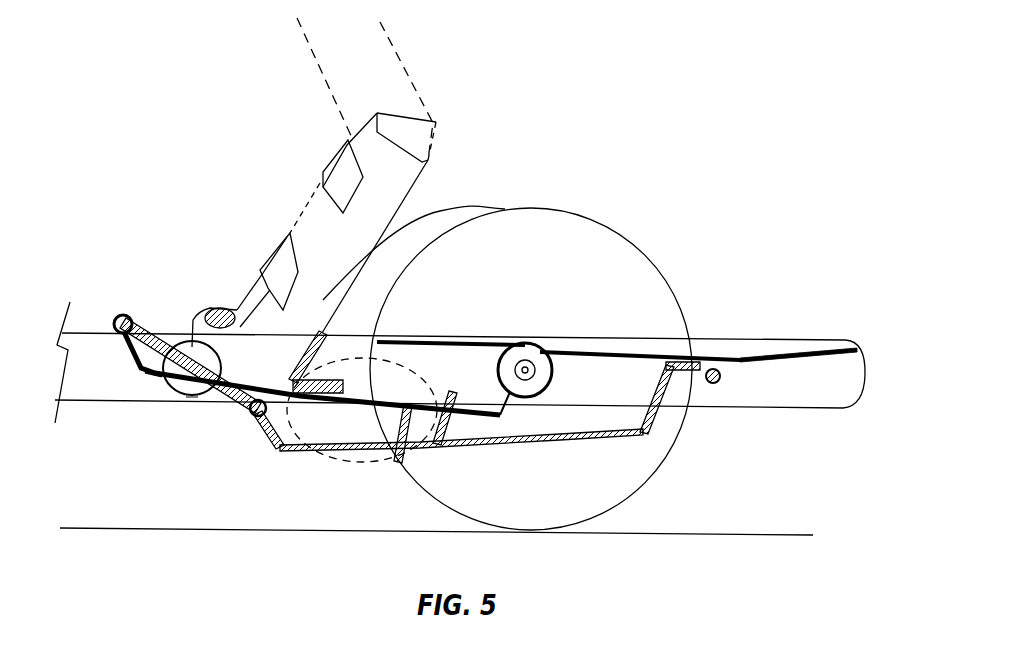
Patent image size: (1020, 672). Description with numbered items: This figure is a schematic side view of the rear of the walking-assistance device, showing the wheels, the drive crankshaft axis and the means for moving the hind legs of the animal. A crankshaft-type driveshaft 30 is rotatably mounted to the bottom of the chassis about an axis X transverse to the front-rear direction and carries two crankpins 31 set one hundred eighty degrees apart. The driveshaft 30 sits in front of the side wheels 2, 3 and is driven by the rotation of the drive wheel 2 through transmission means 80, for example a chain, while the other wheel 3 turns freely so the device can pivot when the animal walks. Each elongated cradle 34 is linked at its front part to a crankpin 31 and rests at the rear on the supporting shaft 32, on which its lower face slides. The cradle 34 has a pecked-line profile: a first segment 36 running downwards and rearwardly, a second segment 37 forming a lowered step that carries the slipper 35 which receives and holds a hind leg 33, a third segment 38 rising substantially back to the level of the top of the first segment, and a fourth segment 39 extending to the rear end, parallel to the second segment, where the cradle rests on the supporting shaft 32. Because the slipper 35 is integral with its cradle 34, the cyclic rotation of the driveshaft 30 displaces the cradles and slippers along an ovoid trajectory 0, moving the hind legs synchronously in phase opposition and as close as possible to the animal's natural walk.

The drive wheel 2 is at (544, 326).
The free wheel 3 is at (603, 228).
The hind leg 33 is at (380, 65).
The slipper 35 is at (372, 337).
The driveshaft 30 is at (158, 338).
The crankpin 31 is at (129, 315).
The first segment 36 is at (127, 362).
The second segment 37 is at (152, 373).
The axis of rotation X is at (185, 397).
The cradle 34 is at (280, 447).
The ovoid trajectory 0 is at (347, 465).
The transmission means 80 is at (480, 335).
The third segment 38 is at (517, 397).
The fourth segment 39 is at (615, 340).
The supporting shaft 32 is at (714, 383).